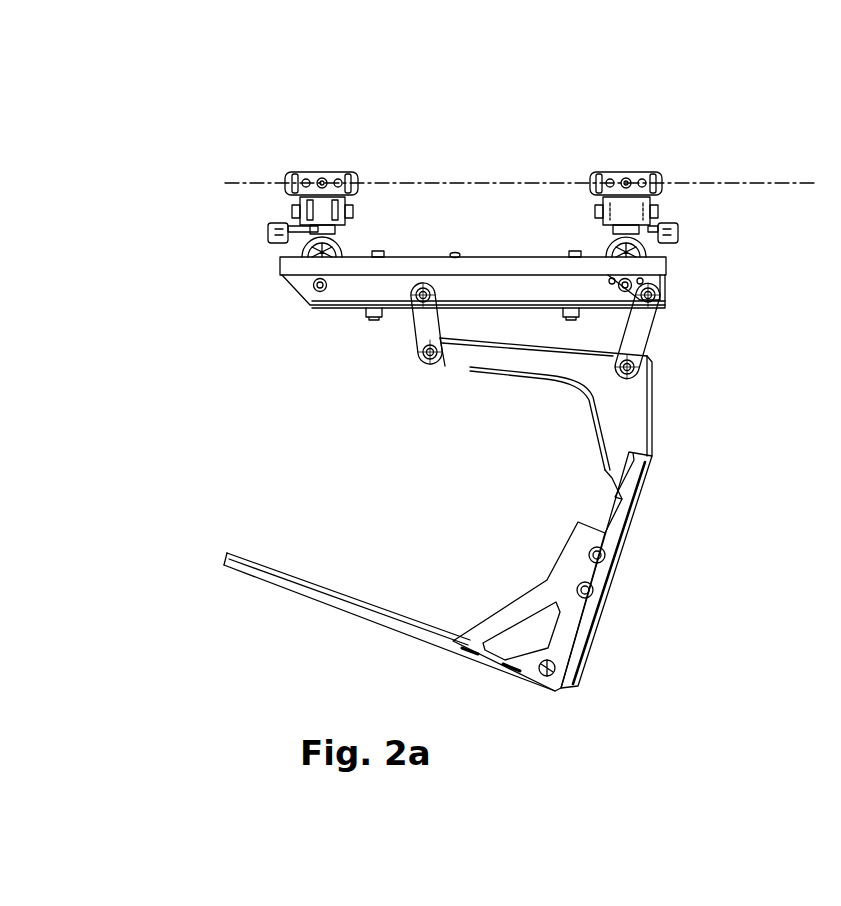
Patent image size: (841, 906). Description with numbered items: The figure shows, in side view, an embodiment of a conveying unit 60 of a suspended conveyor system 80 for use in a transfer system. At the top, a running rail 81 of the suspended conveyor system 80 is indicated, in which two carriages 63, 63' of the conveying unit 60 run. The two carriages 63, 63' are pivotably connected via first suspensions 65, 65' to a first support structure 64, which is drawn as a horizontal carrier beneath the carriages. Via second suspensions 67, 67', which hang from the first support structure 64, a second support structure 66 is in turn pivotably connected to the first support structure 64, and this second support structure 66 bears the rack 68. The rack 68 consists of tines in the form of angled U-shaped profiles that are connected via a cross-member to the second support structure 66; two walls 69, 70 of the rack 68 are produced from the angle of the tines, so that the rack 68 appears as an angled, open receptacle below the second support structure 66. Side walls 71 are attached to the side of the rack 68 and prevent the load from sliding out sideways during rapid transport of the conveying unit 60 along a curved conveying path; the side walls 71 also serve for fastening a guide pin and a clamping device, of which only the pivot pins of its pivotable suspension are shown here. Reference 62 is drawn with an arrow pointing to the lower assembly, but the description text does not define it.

The conveying unit 60 is at (156, 170).
The support frame 62 is at (362, 462).
The carriage 63 is at (330, 176).
The carriage 63' is at (653, 173).
The first support structure 64 is at (473, 290).
The first suspension 65 is at (365, 200).
The first suspension 65' is at (680, 263).
The second support structure 66 is at (637, 408).
The second suspension 67 is at (372, 330).
The second suspension 67' is at (682, 331).
The rack 68 is at (732, 454).
The wall 69 is at (617, 514).
The wall 70 is at (355, 610).
The side wall 71 is at (567, 612).
The suspended conveyor system 80 is at (560, 104).
The running rail 81 is at (513, 182).